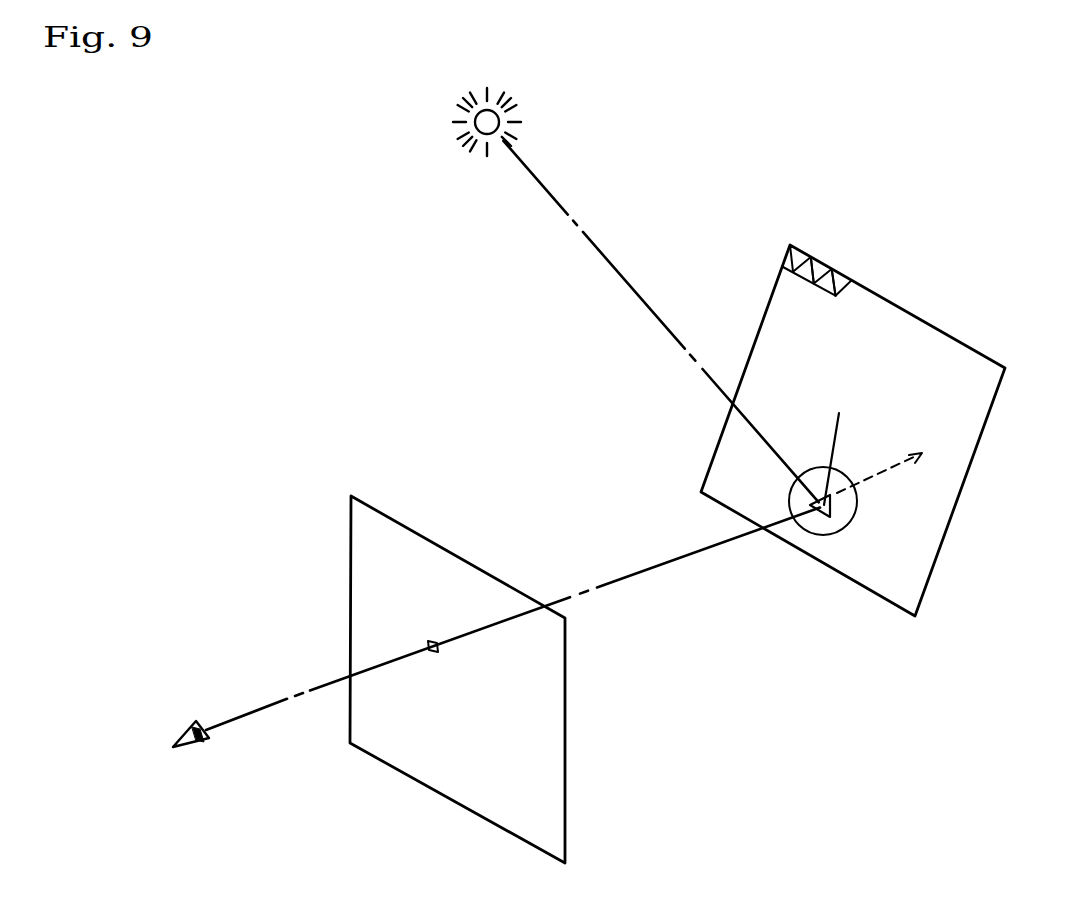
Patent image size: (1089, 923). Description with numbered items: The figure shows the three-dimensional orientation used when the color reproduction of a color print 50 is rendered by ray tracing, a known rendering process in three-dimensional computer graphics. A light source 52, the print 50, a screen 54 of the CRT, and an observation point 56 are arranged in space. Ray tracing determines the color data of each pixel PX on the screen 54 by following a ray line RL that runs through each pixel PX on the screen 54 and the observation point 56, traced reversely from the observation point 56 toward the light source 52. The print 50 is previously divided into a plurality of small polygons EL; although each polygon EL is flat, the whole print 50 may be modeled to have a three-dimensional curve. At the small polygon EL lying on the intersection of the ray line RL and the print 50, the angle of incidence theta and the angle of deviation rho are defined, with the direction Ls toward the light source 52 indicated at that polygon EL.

The color print 50 is at (926, 318).
The light source 52 is at (533, 115).
The screen 54 is at (566, 717).
The observation point 56 is at (193, 751).
The small polygon EL is at (840, 281).
The pixel PX is at (444, 655).
The ray line RL is at (621, 578).
The light source direction vector Ls is at (898, 463).